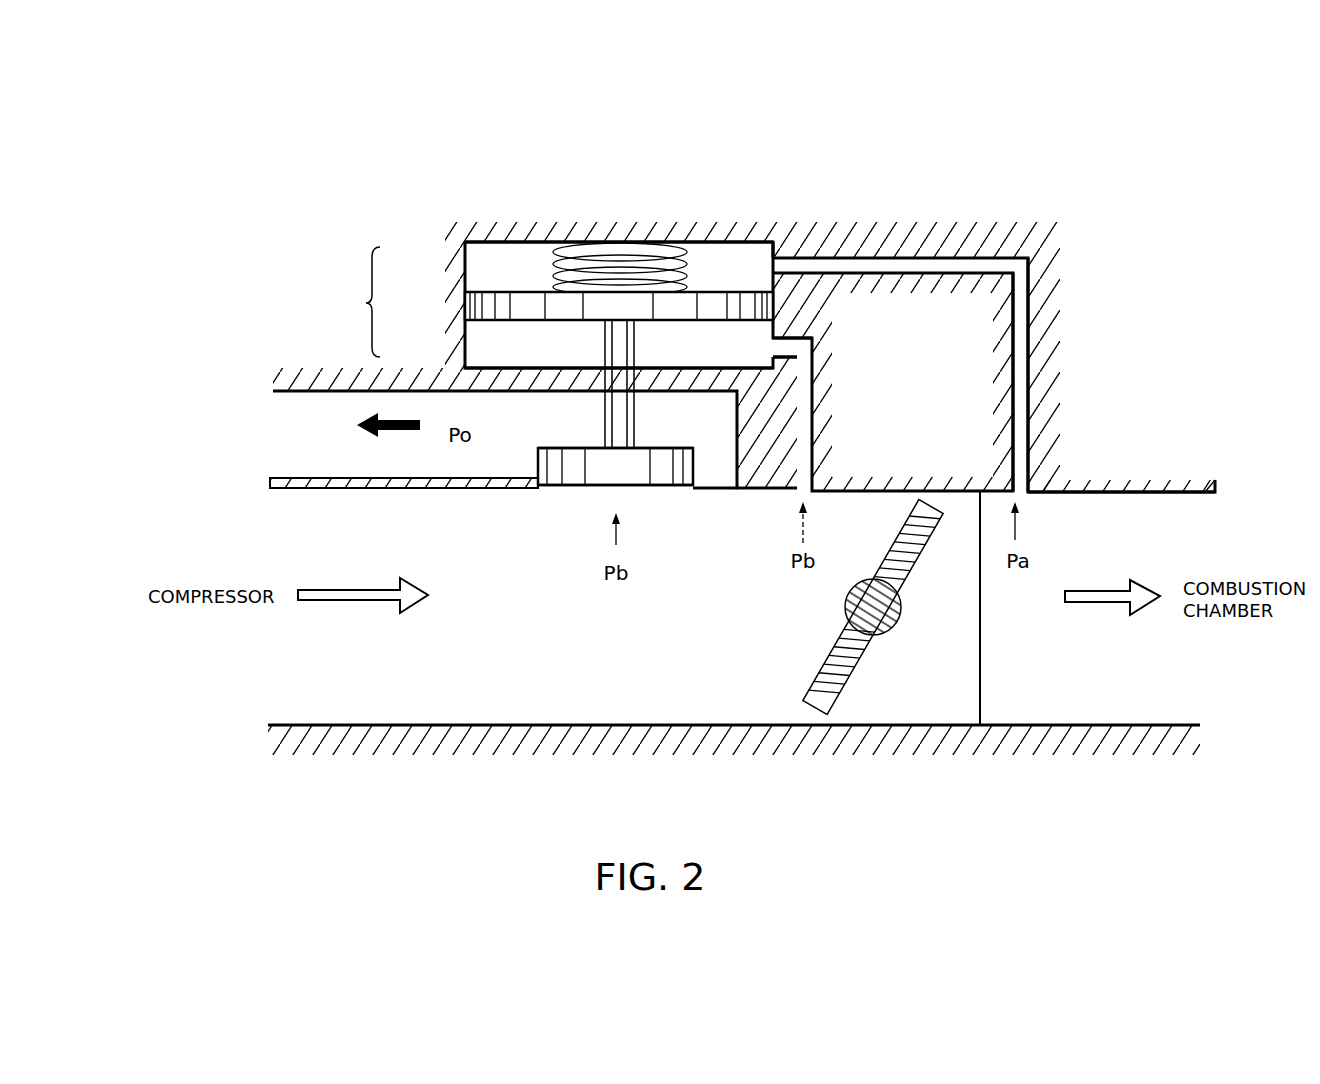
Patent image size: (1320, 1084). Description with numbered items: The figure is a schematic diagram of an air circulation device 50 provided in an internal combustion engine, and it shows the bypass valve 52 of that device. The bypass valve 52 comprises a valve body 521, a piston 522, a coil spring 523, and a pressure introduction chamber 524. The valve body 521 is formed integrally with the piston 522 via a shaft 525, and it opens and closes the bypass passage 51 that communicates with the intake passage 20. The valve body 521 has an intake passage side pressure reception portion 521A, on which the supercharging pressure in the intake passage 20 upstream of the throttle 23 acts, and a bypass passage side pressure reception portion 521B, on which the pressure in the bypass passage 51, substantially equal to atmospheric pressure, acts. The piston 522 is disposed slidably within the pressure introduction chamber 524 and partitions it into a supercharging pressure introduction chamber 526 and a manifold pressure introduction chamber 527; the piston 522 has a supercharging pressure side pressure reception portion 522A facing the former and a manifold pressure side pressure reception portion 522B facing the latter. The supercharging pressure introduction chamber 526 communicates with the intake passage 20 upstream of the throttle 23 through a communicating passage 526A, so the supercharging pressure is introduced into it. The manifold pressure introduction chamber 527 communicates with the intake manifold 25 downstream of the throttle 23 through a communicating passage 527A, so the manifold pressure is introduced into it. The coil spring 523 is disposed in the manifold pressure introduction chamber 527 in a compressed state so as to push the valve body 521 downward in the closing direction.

The air circulation device 50 is at (830, 308).
The bypass valve 52 is at (490, 230).
The bypass passage 51 is at (302, 402).
The coil spring 523 is at (626, 264).
The piston 522 is at (775, 306).
The supercharging pressure side pressure reception portion 522A is at (797, 338).
The manifold pressure side pressure reception portion 522B is at (718, 292).
The pressure introduction chamber 524 is at (349, 302).
The manifold pressure introduction chamber 527 is at (473, 270).
The supercharging pressure introduction chamber 526 is at (473, 350).
The communicating passage 526A is at (806, 421).
The communicating passage 527A is at (1022, 384).
The shaft 525 is at (623, 410).
The valve body 521 is at (632, 478).
The intake passage side pressure reception portion 521A is at (571, 487).
The bypass passage side pressure reception portion 521B is at (578, 446).
The throttle 23 is at (896, 630).
The intake passage 20 is at (551, 712).
The intake manifold 25 is at (1115, 735).